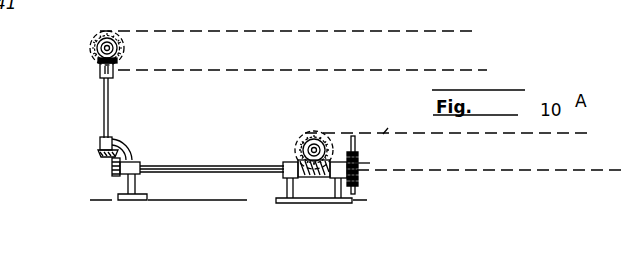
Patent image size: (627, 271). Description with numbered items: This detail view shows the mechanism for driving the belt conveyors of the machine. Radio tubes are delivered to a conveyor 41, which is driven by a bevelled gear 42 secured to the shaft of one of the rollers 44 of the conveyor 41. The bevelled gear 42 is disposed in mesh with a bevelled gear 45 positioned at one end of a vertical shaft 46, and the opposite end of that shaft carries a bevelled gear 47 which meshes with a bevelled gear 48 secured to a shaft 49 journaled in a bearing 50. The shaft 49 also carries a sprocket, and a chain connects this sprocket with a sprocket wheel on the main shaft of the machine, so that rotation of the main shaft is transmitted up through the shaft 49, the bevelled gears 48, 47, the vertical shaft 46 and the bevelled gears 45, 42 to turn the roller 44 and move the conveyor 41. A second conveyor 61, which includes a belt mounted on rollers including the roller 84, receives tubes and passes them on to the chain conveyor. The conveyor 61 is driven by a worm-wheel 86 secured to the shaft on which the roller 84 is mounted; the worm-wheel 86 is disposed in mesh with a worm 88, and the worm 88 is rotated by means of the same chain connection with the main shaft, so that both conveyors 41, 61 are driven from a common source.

The conveyor 41 is at (270, 31).
The bevelled gear 42 is at (90, 48).
The roller 44 is at (128, 50).
The bevelled gear 45 is at (100, 62).
The vertical shaft 46 is at (109, 103).
The bevelled gear 47 is at (100, 157).
The bevelled gear 48 is at (115, 172).
The shaft 49 is at (178, 168).
The bearing 50 is at (340, 192).
The conveyor 61 is at (383, 134).
The roller 84 is at (297, 139).
The worm-wheel 86 is at (320, 137).
The worm 88 is at (310, 177).